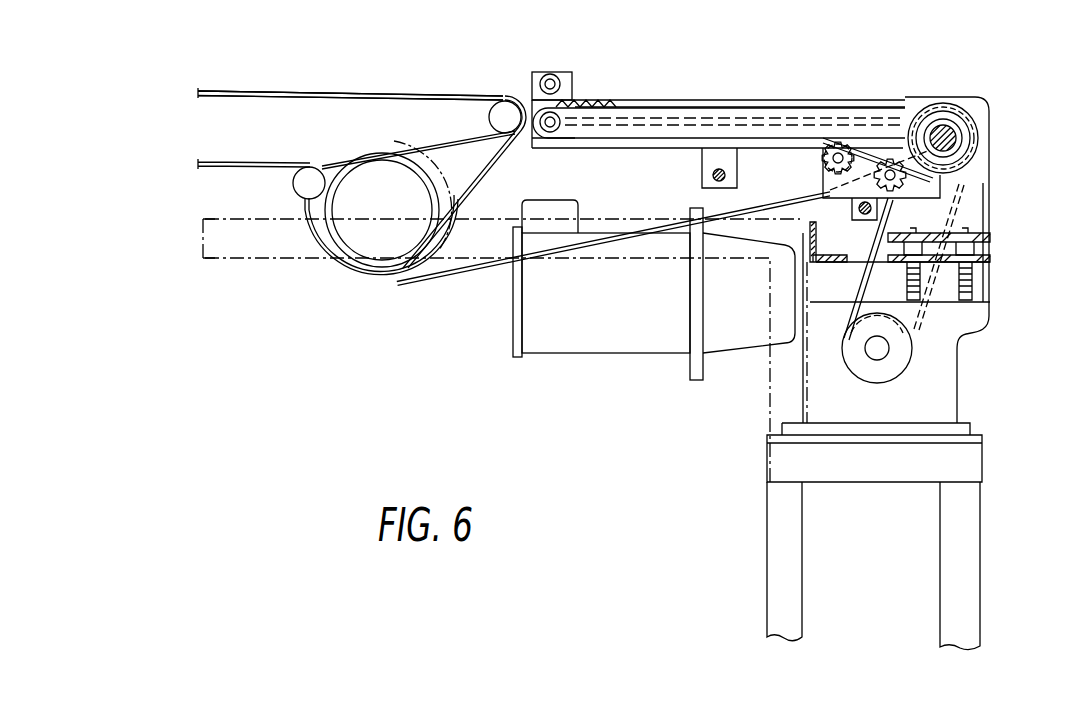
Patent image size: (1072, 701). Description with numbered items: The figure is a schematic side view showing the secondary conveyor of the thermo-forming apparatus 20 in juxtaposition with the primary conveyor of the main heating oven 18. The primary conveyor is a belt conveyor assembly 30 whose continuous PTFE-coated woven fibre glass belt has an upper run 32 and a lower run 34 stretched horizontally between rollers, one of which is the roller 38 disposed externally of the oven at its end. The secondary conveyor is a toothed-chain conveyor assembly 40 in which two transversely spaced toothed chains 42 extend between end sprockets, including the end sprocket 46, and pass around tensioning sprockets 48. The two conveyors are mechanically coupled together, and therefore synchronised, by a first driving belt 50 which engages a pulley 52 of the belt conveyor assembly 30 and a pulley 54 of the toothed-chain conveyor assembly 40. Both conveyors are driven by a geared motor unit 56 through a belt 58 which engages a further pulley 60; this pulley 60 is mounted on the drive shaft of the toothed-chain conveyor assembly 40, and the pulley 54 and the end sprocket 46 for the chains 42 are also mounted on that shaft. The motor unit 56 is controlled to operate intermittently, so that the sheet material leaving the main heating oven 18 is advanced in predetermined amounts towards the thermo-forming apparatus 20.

The main heating oven 18 is at (242, 62).
The thermo-forming apparatus 20 is at (798, 61).
The belt conveyor assembly 30 is at (364, 83).
The upper run 32 is at (220, 97).
The lower run 34 is at (217, 162).
The roller 38 is at (490, 118).
The toothed-chain conveyor assembly 40 is at (886, 95).
The toothed chains 42 is at (587, 102).
The end sprocket 46 is at (968, 155).
The tensioning sprocket 48 is at (821, 164).
The first driving belt 50 is at (430, 283).
The pulley 52 is at (443, 160).
The pulley 54 is at (958, 136).
The geared motor unit 56 is at (615, 350).
The belt 58 is at (960, 347).
The further pulley 60 is at (973, 122).